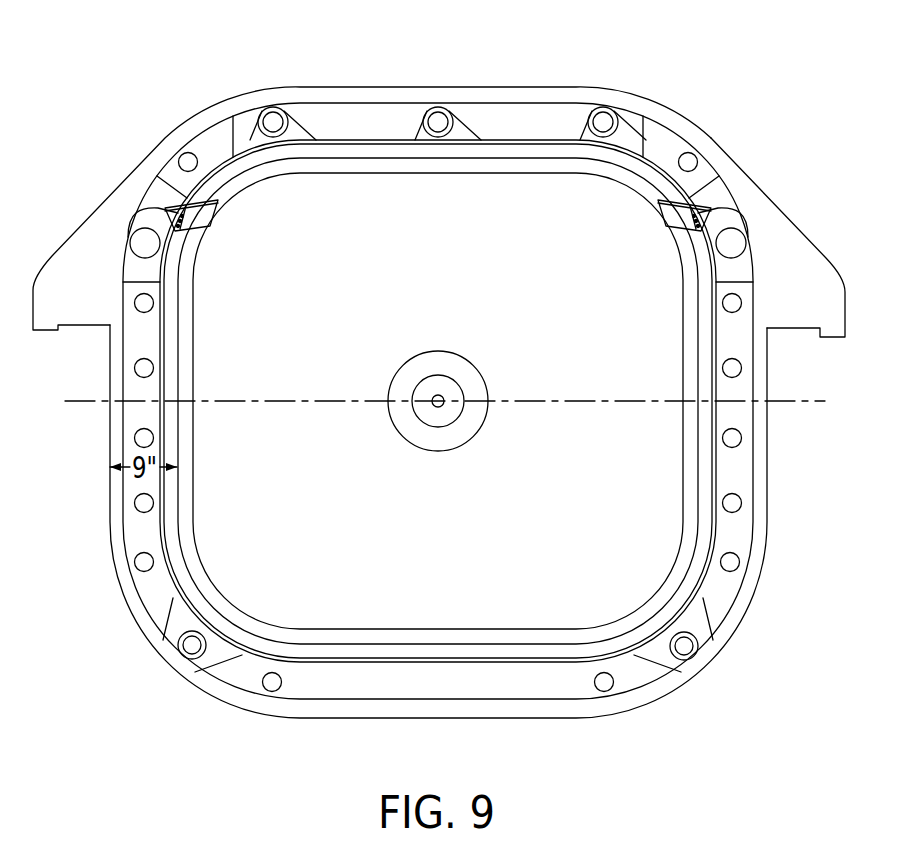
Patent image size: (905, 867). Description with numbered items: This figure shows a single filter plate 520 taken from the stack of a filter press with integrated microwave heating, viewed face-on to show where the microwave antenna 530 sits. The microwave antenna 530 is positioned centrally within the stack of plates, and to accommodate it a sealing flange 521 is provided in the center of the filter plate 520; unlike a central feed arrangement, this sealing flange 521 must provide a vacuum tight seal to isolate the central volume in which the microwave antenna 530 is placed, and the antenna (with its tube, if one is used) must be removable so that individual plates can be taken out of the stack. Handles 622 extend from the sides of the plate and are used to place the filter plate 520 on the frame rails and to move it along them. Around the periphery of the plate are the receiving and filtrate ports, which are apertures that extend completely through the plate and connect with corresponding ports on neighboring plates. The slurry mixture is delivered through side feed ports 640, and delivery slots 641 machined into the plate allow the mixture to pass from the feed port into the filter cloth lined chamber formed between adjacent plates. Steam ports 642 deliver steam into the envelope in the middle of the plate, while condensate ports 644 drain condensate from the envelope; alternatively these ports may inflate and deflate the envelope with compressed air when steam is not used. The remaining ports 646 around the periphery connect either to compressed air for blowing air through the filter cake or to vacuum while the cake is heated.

The filter plate 520 is at (88, 139).
The sealing flange 521 is at (442, 362).
The microwave antenna 530 is at (436, 407).
The handles 622 is at (793, 240).
The feed ports 640 is at (142, 243).
The delivery slots 641 is at (204, 218).
The steam ports 642 is at (273, 118).
The condensate ports 644 is at (191, 650).
The ports 646 is at (742, 436).